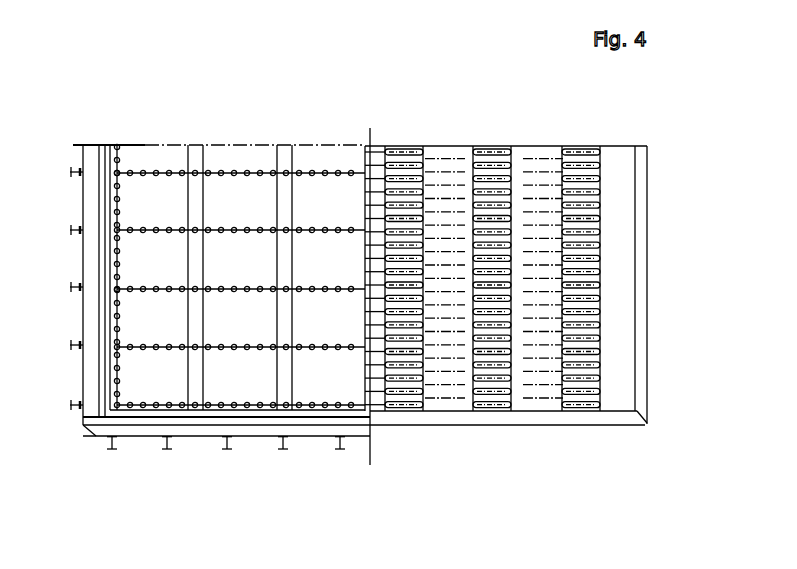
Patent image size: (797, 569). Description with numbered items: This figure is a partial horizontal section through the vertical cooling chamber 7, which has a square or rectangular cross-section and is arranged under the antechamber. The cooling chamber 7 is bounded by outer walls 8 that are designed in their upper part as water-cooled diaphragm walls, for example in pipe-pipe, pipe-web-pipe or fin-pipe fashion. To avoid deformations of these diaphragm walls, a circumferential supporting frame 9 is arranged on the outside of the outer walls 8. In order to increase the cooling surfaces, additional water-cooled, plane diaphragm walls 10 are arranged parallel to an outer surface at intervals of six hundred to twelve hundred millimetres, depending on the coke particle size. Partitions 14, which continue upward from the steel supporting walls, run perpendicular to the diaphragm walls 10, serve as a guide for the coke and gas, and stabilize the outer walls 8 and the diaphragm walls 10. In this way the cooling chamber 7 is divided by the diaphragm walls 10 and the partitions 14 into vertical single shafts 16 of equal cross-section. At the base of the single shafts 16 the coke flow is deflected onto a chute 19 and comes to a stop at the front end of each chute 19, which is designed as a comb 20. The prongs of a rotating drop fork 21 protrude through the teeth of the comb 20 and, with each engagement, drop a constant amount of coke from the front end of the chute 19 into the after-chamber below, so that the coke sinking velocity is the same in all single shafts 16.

The cooling chamber 7 is at (315, 271).
The outer walls 8 is at (117, 303).
The supporting frame 9 is at (70, 232).
The diaphragm walls 10 is at (158, 176).
The partitions 14 is at (203, 196).
The single shafts 16 is at (138, 331).
The chute 19 is at (514, 404).
The comb 20 is at (488, 406).
The rotating drop fork 21 is at (449, 404).